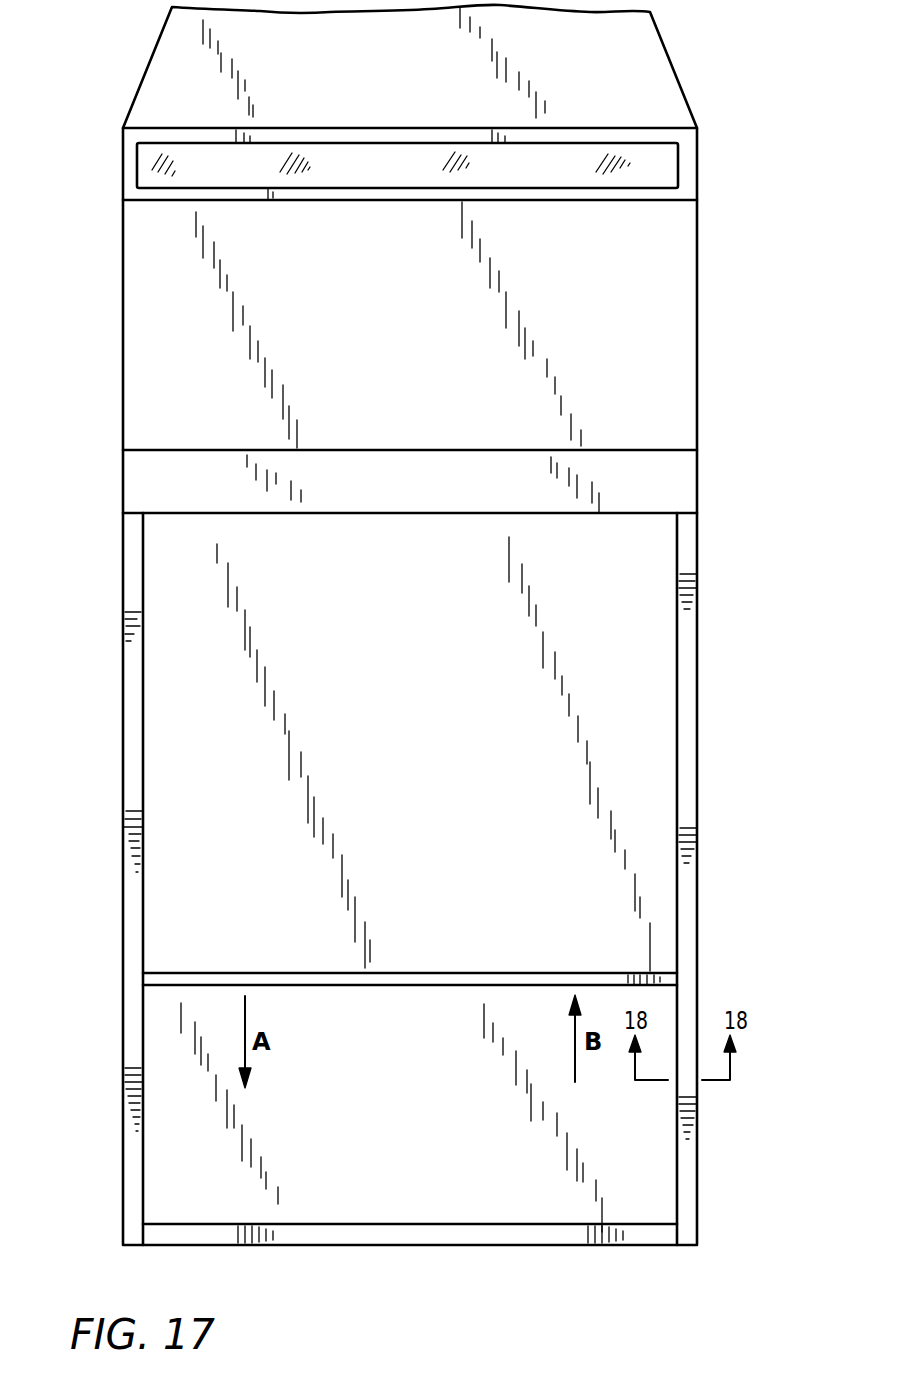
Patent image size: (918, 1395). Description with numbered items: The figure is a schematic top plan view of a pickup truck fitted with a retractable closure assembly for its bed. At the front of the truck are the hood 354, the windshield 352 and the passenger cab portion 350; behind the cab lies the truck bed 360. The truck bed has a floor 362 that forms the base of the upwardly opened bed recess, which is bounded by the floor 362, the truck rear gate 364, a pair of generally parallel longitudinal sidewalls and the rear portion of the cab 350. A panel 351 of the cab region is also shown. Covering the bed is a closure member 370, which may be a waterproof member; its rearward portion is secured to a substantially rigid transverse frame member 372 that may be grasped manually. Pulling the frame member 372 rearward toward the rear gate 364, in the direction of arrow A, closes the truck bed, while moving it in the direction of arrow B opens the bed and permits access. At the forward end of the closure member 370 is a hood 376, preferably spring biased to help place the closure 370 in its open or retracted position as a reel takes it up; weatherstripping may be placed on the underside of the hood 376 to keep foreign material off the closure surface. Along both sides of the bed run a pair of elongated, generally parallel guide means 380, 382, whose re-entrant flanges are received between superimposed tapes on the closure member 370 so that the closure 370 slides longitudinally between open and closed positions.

The passenger cab portion 350 is at (119, 264).
The upper body panel 351 is at (676, 328).
The windshield 352 is at (665, 176).
The hood 354 is at (668, 96).
The truck bed 360 is at (120, 1095).
The floor 362 is at (446, 1140).
The truck rear gate 364 is at (437, 1238).
The closure member 370 is at (432, 753).
The transverse frame member 372 is at (403, 978).
The hood 376 is at (655, 488).
The guide means 380 is at (130, 752).
The guide means 382 is at (692, 752).